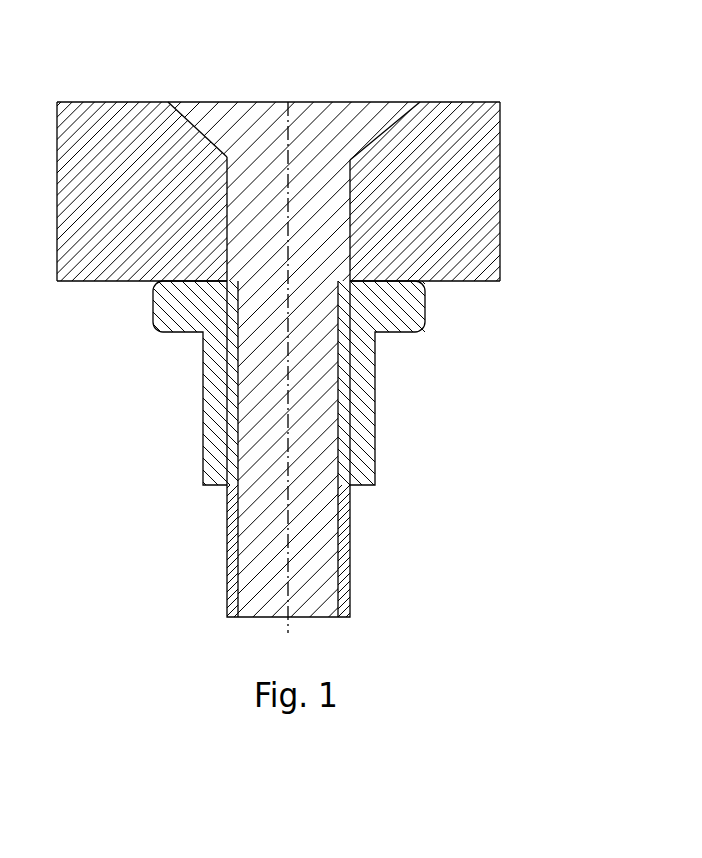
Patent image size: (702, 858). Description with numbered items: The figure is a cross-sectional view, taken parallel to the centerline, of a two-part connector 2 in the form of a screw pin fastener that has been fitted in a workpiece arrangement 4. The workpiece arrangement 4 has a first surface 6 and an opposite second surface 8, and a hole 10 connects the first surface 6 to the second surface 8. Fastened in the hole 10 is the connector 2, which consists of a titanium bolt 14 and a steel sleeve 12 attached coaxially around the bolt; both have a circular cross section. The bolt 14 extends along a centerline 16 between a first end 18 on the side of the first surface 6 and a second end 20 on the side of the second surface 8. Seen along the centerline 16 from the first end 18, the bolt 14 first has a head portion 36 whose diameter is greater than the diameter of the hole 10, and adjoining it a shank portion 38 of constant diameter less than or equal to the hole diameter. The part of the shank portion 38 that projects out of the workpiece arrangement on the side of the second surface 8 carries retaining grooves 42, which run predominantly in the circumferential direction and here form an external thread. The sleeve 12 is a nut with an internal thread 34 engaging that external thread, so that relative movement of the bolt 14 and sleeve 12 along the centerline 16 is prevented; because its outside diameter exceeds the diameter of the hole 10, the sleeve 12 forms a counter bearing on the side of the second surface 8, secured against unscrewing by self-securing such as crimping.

The connector 2 is at (411, 383).
The workpiece arrangement 4 is at (478, 168).
The first surface 6 is at (483, 102).
The second surface 8 is at (483, 282).
The hole 10 is at (227, 228).
The sleeve 12 is at (210, 465).
The bolt 14 is at (245, 115).
The centerline 16 is at (289, 102).
The first end 18 is at (343, 118).
The second end 20 is at (327, 562).
The internal thread 34 is at (227, 422).
The head portion 36 is at (217, 128).
The shank portion 38 is at (257, 361).
The retaining grooves 42 is at (345, 440).